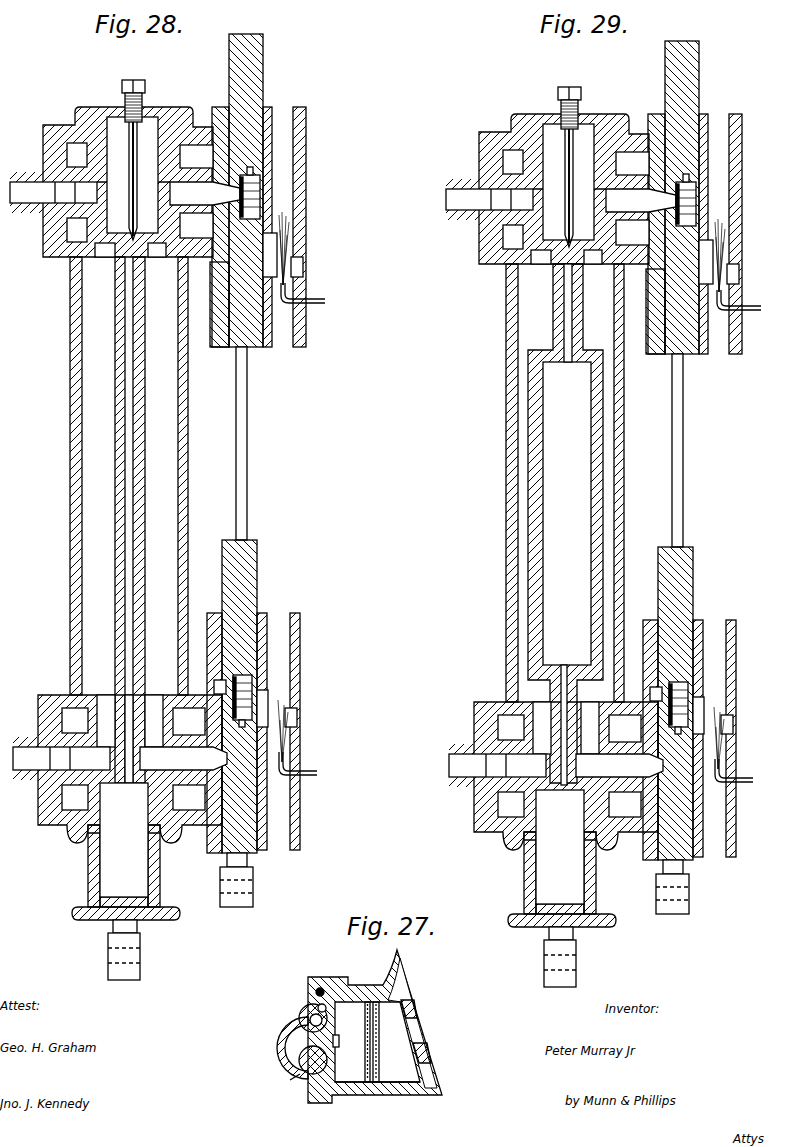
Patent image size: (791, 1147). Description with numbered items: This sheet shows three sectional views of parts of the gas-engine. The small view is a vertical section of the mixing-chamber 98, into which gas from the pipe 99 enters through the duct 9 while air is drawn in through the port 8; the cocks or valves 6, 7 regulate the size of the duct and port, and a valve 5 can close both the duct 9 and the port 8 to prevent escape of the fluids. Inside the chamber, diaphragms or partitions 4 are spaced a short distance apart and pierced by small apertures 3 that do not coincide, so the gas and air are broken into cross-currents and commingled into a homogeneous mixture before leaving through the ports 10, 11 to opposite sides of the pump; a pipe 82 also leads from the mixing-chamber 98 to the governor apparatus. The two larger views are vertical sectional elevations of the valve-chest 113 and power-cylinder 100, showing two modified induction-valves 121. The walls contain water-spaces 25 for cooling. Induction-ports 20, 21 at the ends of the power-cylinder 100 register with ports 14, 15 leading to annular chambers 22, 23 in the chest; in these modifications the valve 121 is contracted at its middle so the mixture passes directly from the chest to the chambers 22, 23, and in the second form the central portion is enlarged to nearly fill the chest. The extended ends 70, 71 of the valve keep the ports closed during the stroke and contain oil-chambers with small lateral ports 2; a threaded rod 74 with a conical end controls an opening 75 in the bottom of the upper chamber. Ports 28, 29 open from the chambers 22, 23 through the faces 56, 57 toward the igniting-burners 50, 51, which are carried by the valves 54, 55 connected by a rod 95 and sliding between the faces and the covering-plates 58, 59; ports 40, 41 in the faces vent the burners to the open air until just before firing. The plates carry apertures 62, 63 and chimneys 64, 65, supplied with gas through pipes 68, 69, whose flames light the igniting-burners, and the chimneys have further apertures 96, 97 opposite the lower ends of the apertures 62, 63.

In FIG. 28, the lateral ports 2 is at (104, 182).
In FIG. 29, the lateral ports 2 is at (565, 513).
In FIG. 27, the apertures 3 is at (365, 1029).
In FIG. 27, the diaphragms or partitions 4 is at (365, 1072).
In FIG. 27, the valve 5 is at (338, 1047).
In FIG. 27, the cock or valve 6 is at (282, 1016).
In FIG. 27, the cock or valve 7 is at (296, 1078).
In FIG. 27, the port 8 is at (300, 1056).
In FIG. 27, the duct 9 is at (312, 1000).
In FIG. 27, the port 10 is at (410, 1011).
In FIG. 27, the port 11 is at (423, 1055).
In FIG. 28, the port 14 is at (63, 192).
In FIG. 29, the port 14 is at (499, 199).
In FIG. 28, the port 15 is at (58, 758).
In FIG. 29, the port 15 is at (494, 765).
In FIG. 28, the induction-port 20 is at (53, 192).
In FIG. 29, the induction-port 20 is at (489, 199).
In FIG. 28, the induction-port 21 is at (61, 758).
In FIG. 29, the induction-port 21 is at (497, 765).
In FIG. 28, the annular chamber 22 is at (131, 192).
In FIG. 29, the annular chamber 22 is at (567, 199).
In FIG. 28, the annular chamber 23 is at (126, 758).
In FIG. 29, the annular chamber 23 is at (562, 765).
In FIG. 28, the water-spaces 25 is at (137, 476).
In FIG. 29, the water-spaces 25 is at (573, 483).
In FIG. 28, the port 28 is at (205, 193).
In FIG. 29, the port 28 is at (641, 200).
In FIG. 28, the port 29 is at (183, 758).
In FIG. 29, the port 29 is at (619, 765).
In FIG. 28, the port 40 is at (210, 269).
In FIG. 29, the port 40 is at (647, 311).
In FIG. 28, the port 41 is at (214, 688).
In FIG. 29, the port 41 is at (646, 693).
In FIG. 28, the igniting-burner 50 is at (262, 195).
In FIG. 29, the igniting-burner 50 is at (704, 200).
In FIG. 28, the igniting-burner 51 is at (252, 690).
In FIG. 29, the igniting-burner 51 is at (696, 702).
In FIG. 28, the valve 54 is at (265, 78).
In FIG. 29, the valve 54 is at (694, 197).
In FIG. 28, the valve 55 is at (257, 580).
In FIG. 29, the valve 55 is at (689, 703).
In FIG. 28, the face 56 is at (218, 106).
In FIG. 29, the face 56 is at (651, 221).
In FIG. 28, the face 57 is at (215, 613).
In FIG. 29, the face 57 is at (644, 729).
In FIG. 28, the covering-plate 58 is at (270, 108).
In FIG. 29, the covering-plate 58 is at (715, 223).
In FIG. 28, the covering-plate 59 is at (264, 613).
In FIG. 29, the covering-plate 59 is at (707, 727).
In FIG. 28, the aperture 62 is at (277, 248).
In FIG. 29, the aperture 62 is at (732, 261).
In FIG. 28, the aperture 63 is at (264, 708).
In FIG. 29, the aperture 63 is at (728, 709).
In FIG. 28, the chimney 64 is at (306, 152).
In FIG. 29, the chimney 64 is at (748, 234).
In FIG. 28, the chimney 65 is at (300, 630).
In FIG. 28, the gas pipe 68 is at (312, 307).
In FIG. 29, the gas pipe 68 is at (742, 313).
In FIG. 28, the gas pipe 69 is at (313, 770).
In FIG. 29, the gas pipe 69 is at (738, 768).
In FIG. 28, the valve end 70 is at (132, 175).
In FIG. 29, the valve end 70 is at (568, 182).
In FIG. 28, the valve end 71 is at (126, 881).
In FIG. 29, the valve end 71 is at (562, 888).
In FIG. 28, the threaded rod 74 is at (145, 87).
In FIG. 29, the threaded rod 74 is at (579, 164).
In FIG. 28, the opening 75 is at (112, 262).
In FIG. 29, the opening 75 is at (566, 267).
In FIG. 27, the pipe 82 is at (410, 985).
In FIG. 28, the rod 95 is at (247, 462).
In FIG. 29, the rod 95 is at (692, 450).
In FIG. 28, the aperture 96 is at (303, 268).
In FIG. 29, the aperture 96 is at (747, 274).
In FIG. 28, the aperture 97 is at (297, 719).
In FIG. 29, the aperture 97 is at (742, 724).
In FIG. 27, the mixing-chamber 98 is at (377, 1042).
In FIG. 27, the gas pipe 99 is at (321, 988).
In FIG. 28, the power-cylinder 100 is at (43, 153).
In FIG. 29, the power-cylinder 100 is at (550, 482).
In FIG. 28, the valve-chest 113 is at (188, 467).
In FIG. 29, the valve-chest 113 is at (582, 483).
In FIG. 28, the induction-valve 121 is at (115, 467).
In FIG. 29, the induction-valve 121 is at (565, 524).